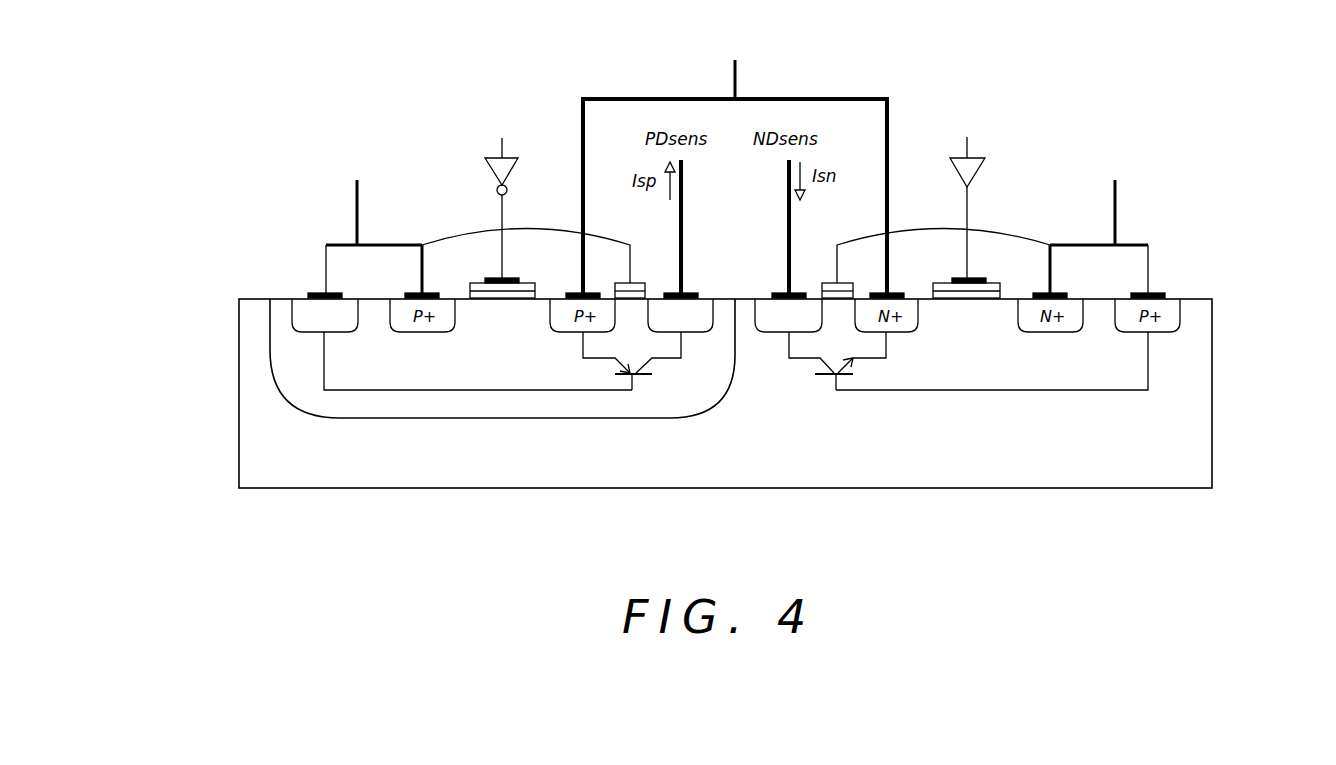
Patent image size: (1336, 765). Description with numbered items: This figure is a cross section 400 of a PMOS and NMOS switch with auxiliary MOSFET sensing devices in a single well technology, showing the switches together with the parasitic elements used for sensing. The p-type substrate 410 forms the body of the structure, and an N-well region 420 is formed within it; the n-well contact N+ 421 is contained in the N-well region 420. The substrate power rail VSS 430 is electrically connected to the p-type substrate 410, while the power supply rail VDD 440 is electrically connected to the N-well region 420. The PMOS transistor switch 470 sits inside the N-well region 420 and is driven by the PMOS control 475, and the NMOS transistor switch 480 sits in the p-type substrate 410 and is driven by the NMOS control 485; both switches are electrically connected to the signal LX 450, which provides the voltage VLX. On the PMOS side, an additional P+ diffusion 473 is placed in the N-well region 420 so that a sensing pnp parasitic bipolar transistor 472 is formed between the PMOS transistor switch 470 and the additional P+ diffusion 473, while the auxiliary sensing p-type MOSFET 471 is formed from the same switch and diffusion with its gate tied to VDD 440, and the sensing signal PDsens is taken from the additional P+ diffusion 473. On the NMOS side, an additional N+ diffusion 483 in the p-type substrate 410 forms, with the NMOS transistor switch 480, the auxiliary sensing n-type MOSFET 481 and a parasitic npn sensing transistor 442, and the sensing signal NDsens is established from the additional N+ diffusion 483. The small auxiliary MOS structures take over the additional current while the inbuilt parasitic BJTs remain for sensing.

The cross section 400 is at (230, 246).
The p-type substrate 410 is at (1190, 407).
The N-well region 420 is at (303, 386).
The n-well contact N+ 421 is at (290, 315).
The substrate power rail VSS 430 is at (1110, 155).
The power supply rail VDD 440 is at (365, 155).
The parasitic NPN transistor 442 is at (847, 393).
The signal LX 450 is at (740, 28).
The PMOS transistor switch 470 is at (480, 290).
The auxiliary sensing p-type MOSFET 471 is at (650, 275).
The sensing pnp parasitic bipolar transistor 472 is at (622, 392).
The additional P+ diffusion 473 is at (690, 333).
The PMOS control 475 is at (518, 110).
The NMOS transistor switch 480 is at (988, 289).
The auxiliary sensing n-type MOSFET 481 is at (826, 275).
The additional N+ diffusion 483 is at (783, 333).
The NMOS control 485 is at (955, 110).